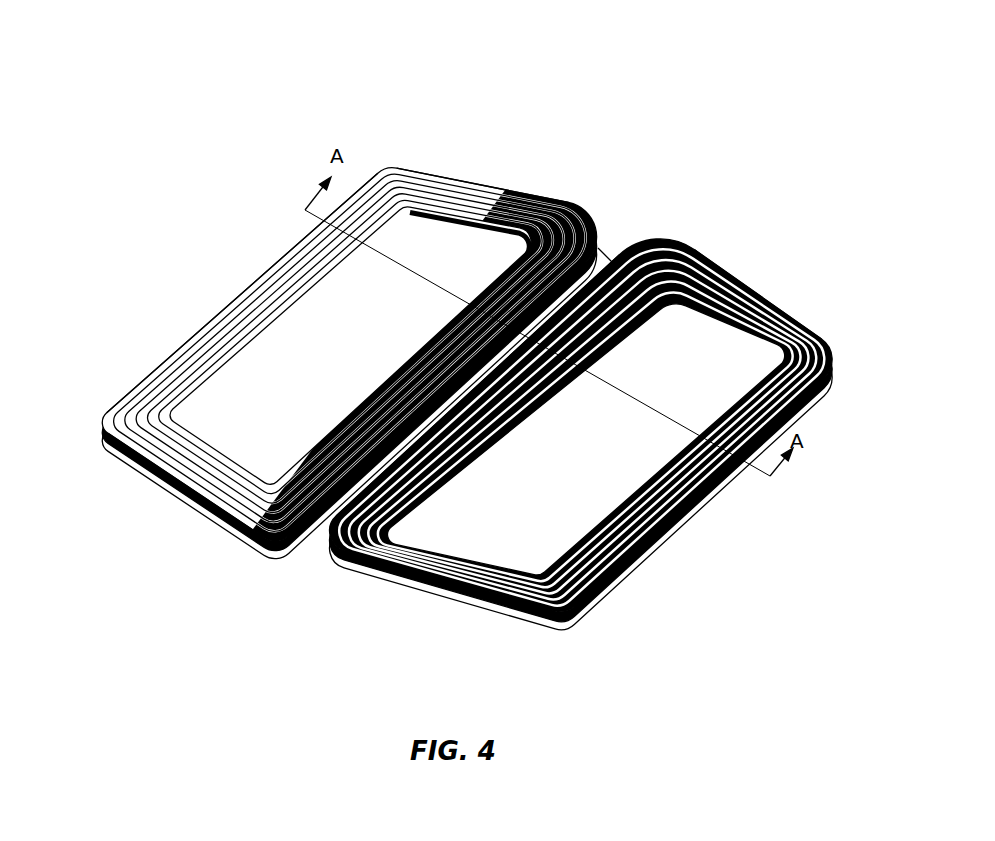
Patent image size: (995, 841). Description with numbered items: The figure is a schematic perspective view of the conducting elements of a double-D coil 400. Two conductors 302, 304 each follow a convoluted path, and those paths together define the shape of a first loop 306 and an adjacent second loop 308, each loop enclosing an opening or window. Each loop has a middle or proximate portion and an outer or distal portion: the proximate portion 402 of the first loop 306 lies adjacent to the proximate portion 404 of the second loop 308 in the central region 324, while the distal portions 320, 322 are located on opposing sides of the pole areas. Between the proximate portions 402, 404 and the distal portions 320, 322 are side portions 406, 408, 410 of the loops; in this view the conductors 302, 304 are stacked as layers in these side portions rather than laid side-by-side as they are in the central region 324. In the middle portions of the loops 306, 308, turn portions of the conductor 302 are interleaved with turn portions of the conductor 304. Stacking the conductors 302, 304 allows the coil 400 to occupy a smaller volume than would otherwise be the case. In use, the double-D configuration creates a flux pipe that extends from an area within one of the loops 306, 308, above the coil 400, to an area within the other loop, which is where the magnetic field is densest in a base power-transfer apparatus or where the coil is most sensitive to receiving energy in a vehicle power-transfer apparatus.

The double-D coil 400 is at (464, 343).
The first loop 306 is at (508, 166).
The second loop 308 is at (772, 279).
The distal portion of the first loop 320 is at (265, 283).
The distal portion of the second loop 322 is at (657, 506).
The central region 324 is at (617, 233).
The proximate portion of the first loop 402 is at (431, 372).
The proximate portion of the second loop 404 is at (519, 408).
The side portion 406 is at (470, 193).
The side portion 408 is at (456, 580).
The side portion 410 is at (773, 313).
The conductor 302 is at (133, 470).
The conductor 304 is at (118, 398).